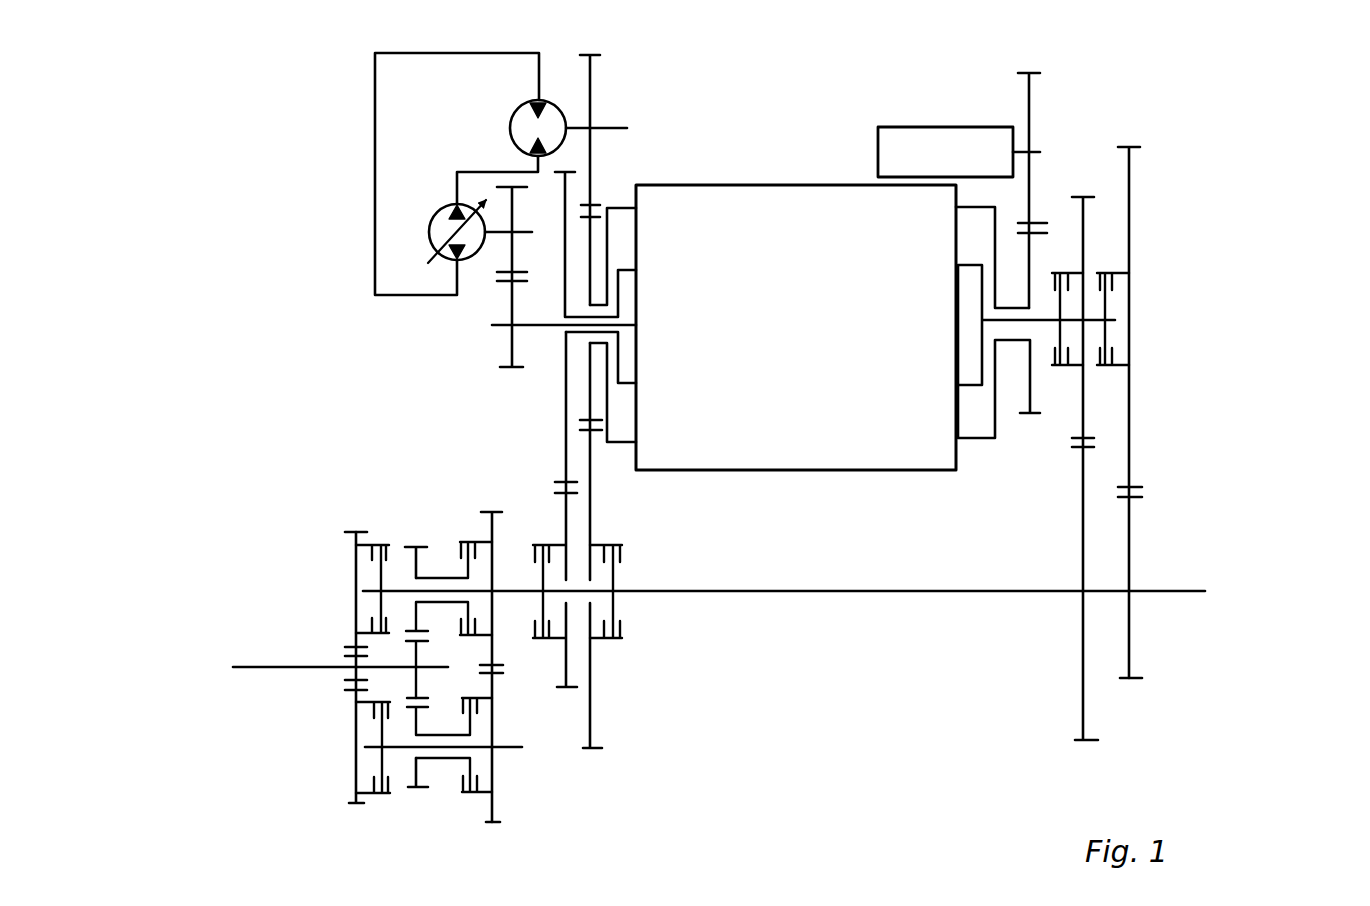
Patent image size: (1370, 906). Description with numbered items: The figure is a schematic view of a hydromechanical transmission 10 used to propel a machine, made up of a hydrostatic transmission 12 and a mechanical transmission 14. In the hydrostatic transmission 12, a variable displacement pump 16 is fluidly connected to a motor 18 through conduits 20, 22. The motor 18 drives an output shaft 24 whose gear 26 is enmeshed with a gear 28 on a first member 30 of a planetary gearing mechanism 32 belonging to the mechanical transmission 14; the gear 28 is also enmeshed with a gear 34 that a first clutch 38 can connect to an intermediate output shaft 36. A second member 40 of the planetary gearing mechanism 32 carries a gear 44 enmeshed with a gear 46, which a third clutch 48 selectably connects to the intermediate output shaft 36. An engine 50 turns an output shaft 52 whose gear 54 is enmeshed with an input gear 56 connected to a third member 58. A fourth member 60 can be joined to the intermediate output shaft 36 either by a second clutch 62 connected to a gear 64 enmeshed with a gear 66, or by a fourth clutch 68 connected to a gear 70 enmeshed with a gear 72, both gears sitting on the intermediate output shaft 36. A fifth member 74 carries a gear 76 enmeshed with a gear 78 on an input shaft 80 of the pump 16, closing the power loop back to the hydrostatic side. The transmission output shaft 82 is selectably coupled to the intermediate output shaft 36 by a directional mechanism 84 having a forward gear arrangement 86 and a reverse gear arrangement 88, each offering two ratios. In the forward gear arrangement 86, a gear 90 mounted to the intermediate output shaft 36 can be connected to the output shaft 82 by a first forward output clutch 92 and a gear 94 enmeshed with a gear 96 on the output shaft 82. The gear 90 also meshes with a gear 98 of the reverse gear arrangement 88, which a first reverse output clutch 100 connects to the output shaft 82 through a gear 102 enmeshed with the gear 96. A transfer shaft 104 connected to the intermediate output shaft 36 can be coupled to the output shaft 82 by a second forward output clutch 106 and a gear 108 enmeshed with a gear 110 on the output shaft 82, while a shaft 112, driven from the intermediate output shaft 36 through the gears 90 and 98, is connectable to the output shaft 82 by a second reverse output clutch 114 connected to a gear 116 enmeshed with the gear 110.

The transmission 10 is at (1325, 692).
The hydrostatic transmission 12 is at (416, 331).
The mechanical transmission 14 is at (1156, 62).
The variable displacement pump 16 is at (437, 196).
The motor 18 is at (512, 112).
The conduit 20 is at (375, 151).
The conduit 22 is at (470, 172).
The output shaft 24 is at (618, 128).
The gear 26 is at (601, 55).
The gear 28 is at (601, 200).
The first member 30 is at (620, 204).
The planetary gearing mechanism 32 is at (766, 181).
The gear 34 is at (601, 748).
The intermediate output shaft 36 is at (738, 595).
The first clutch 38 is at (623, 641).
The second member 40 is at (626, 385).
The gear 44 is at (555, 482).
The gear 46 is at (553, 493).
The third clutch 48 is at (533, 641).
The engine 50 is at (933, 126).
The output shaft 52 is at (1040, 148).
The gear 54 is at (1029, 72).
The input gear 56 is at (1047, 230).
The third member 58 is at (981, 440).
The fourth member 60 is at (970, 263).
The second clutch 62 is at (1056, 368).
The gear 64 is at (1072, 438).
The gear 66 is at (1073, 742).
The fourth clutch 68 is at (1105, 368).
The gear 70 is at (1138, 147).
The gear 72 is at (1145, 681).
The fifth member 74 is at (494, 328).
The gear 76 is at (498, 370).
The gear 78 is at (512, 269).
The input shaft 80 is at (521, 232).
The output shaft 82 is at (257, 670).
The directional mechanism 84 is at (336, 526).
The forward gear arrangement 86 is at (362, 528).
The reverse gear arrangement 88 is at (350, 806).
The gear 90 is at (479, 511).
The first forward output clutch 92 is at (462, 542).
The gear 94 is at (403, 547).
The gear 96 is at (429, 641).
The gear 98 is at (500, 823).
The first reverse output clutch 100 is at (462, 793).
The gear 102 is at (410, 790).
The transfer shaft 104 is at (397, 589).
The second forward output clutch 106 is at (378, 637).
The gear 108 is at (347, 526).
The gear 110 is at (343, 655).
The shaft 112 is at (521, 750).
The second reverse output clutch 114 is at (375, 794).
The gear 116 is at (348, 690).